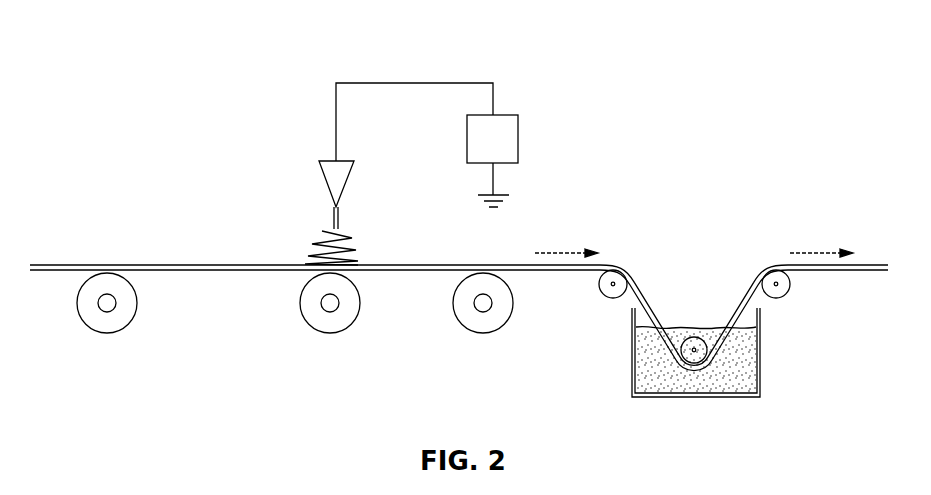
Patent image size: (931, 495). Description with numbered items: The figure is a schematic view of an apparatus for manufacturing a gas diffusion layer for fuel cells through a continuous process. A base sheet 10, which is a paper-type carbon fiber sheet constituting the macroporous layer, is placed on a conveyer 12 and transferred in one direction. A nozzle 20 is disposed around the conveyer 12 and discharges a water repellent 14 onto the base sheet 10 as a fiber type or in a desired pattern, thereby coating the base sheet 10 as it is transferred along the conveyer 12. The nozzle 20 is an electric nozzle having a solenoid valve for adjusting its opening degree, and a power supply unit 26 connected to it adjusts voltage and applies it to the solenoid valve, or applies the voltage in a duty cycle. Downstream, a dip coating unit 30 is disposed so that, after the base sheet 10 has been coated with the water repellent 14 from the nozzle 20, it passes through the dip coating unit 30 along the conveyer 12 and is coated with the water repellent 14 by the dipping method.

The base sheet 10 is at (406, 264).
The conveyer 12 is at (148, 266).
The water repellent 14 is at (328, 232).
The nozzle 20 is at (320, 163).
The power supply unit 26 is at (518, 138).
The dip coating unit 30 is at (740, 362).